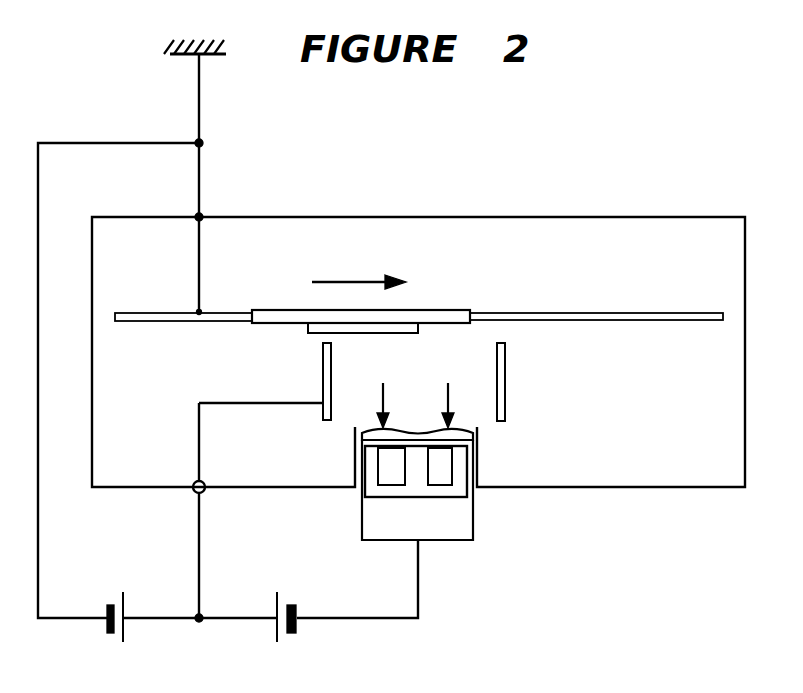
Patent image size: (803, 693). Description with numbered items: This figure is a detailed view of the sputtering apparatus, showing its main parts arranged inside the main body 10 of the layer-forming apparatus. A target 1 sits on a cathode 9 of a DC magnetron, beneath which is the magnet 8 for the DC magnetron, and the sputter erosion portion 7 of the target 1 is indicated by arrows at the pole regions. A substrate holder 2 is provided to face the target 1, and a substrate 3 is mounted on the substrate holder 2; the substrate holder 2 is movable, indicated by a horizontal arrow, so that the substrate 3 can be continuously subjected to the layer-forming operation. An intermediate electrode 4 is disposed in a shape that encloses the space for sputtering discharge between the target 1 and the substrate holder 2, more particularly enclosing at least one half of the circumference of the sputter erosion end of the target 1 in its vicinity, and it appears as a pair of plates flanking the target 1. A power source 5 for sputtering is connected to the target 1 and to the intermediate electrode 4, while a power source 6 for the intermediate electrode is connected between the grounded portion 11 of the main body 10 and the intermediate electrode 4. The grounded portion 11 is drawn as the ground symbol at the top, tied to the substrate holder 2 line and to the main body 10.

The target 1 is at (420, 428).
The substrate holder 2 is at (428, 310).
The substrate 3 is at (308, 331).
The intermediate electrode 4 is at (323, 412).
The power source for sputtering 5 is at (280, 634).
The power source for the intermediate electrode 6 is at (120, 637).
The sputter erosion portion 7 is at (415, 393).
The magnet for a DC magnetron 8 is at (445, 497).
The cathode of the DC magnetron 9 is at (440, 541).
The main body of the layer-forming apparatus 10 is at (478, 217).
The grounded portion of the main body 11 is at (208, 56).